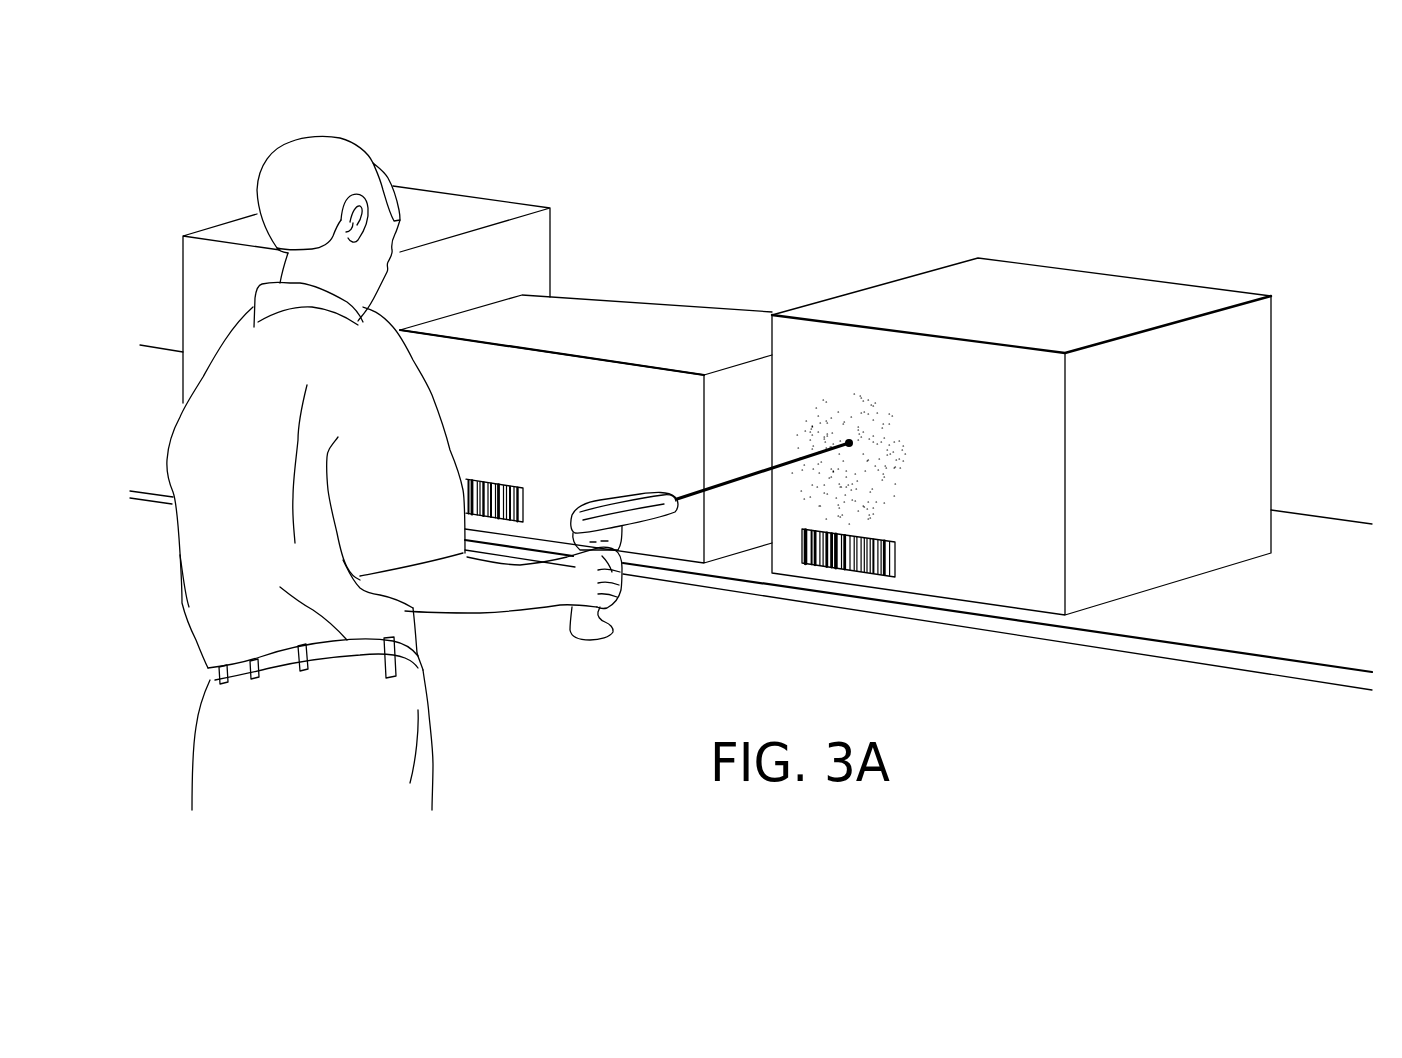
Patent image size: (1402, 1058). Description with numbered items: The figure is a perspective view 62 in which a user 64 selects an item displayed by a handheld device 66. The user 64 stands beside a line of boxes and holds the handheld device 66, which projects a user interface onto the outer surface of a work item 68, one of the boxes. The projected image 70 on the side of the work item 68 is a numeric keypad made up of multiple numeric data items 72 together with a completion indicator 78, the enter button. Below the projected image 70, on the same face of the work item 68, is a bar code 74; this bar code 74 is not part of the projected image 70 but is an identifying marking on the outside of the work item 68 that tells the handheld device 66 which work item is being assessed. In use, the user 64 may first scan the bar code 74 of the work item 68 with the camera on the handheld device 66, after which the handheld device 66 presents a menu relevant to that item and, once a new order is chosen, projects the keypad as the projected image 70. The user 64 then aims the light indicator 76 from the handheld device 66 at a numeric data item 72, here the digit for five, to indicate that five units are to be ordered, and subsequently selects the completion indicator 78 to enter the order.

The perspective view 62 is at (142, 158).
The user 64 is at (187, 437).
The handheld device 66 is at (583, 665).
The work item 68 is at (1088, 277).
The projected image 70 is at (888, 490).
The numeric data item 72 is at (852, 446).
The bar code 74 is at (847, 567).
The light indicator 76 is at (735, 468).
The completion indicator 78 is at (889, 541).